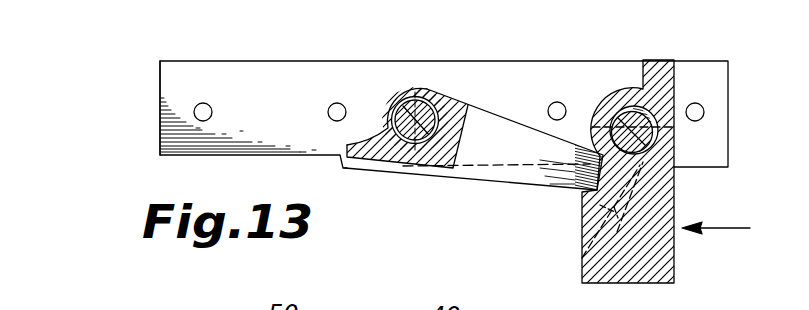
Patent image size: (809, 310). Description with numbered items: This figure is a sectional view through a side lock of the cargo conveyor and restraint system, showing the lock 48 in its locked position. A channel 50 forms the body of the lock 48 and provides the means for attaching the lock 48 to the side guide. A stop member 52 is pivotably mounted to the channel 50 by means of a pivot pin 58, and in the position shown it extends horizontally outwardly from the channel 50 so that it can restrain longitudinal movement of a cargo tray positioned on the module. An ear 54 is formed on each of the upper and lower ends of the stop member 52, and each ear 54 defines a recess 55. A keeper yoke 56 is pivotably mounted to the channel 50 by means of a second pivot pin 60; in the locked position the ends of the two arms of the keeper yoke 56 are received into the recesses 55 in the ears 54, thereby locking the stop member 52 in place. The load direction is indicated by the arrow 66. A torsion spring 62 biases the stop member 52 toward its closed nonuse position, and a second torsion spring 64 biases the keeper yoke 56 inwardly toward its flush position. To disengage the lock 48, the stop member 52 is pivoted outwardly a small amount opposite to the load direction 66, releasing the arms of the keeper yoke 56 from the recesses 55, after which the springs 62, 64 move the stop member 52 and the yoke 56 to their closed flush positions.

The lock 48 is at (121, 123).
The channel 50 is at (372, 72).
The stop member 52 is at (655, 258).
The ear 54 is at (582, 258).
The recess 55 is at (577, 178).
The keeper yoke 56 is at (498, 172).
The pivot pin 58 is at (650, 90).
The pivot pin 60 is at (453, 100).
The torsion spring 62 is at (620, 88).
The second torsion spring 64 is at (427, 97).
The arrow (load direction) 66 is at (722, 226).